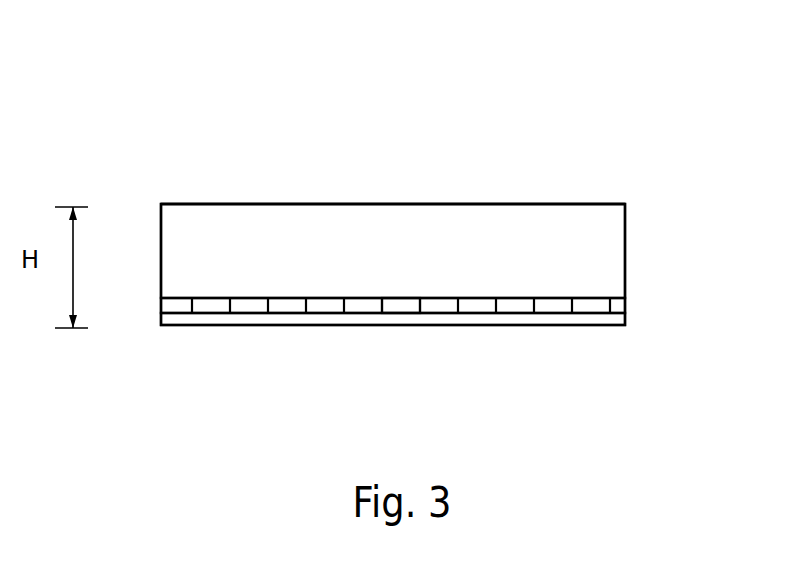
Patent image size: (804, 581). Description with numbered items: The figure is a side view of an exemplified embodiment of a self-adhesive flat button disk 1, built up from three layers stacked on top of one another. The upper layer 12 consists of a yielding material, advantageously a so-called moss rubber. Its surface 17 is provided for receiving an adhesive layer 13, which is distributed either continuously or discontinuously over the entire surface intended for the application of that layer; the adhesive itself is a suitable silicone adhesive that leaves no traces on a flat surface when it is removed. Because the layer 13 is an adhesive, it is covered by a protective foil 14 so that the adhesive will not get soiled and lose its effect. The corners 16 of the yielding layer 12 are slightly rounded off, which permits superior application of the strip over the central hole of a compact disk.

The self-adhesive flat button disk 1 is at (600, 162).
The upper layer 12 is at (606, 236).
The adhesive layer 13 is at (607, 303).
The protective foil 14 is at (588, 317).
The corners 16 is at (161, 204).
The surface 17 is at (390, 298).